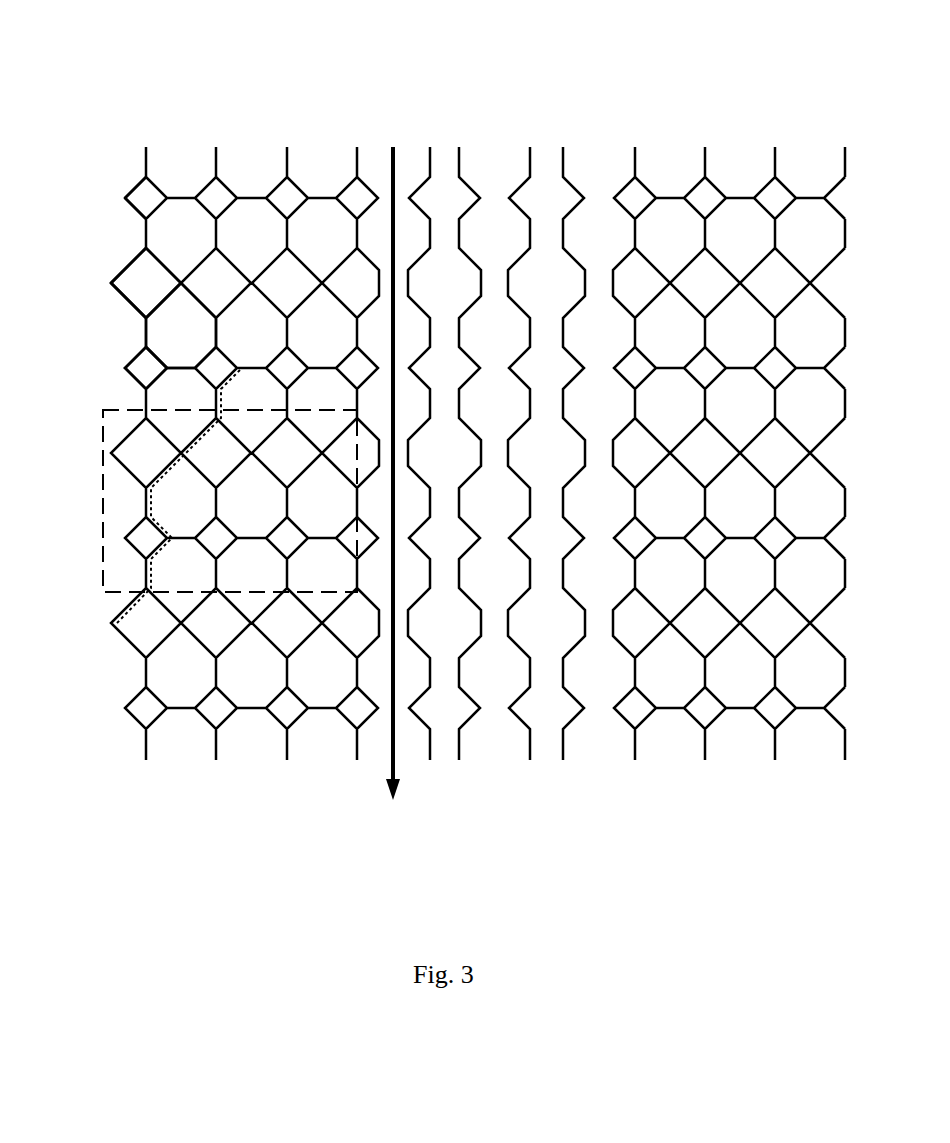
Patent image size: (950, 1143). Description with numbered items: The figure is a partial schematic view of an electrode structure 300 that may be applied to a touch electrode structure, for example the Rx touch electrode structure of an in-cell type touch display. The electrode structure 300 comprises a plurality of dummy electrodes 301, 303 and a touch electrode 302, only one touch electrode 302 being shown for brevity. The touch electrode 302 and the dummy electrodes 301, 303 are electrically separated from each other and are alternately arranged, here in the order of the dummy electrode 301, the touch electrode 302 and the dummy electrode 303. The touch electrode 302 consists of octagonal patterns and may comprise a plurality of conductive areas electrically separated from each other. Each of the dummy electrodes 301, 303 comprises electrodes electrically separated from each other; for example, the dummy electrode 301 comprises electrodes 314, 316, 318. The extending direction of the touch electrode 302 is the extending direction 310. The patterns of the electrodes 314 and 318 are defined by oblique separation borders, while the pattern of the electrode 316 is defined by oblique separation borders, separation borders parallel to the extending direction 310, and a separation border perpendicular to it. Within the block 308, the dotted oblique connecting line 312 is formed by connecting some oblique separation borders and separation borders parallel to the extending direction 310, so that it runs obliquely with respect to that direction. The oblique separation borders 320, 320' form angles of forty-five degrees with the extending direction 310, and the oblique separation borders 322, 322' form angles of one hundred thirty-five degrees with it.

The electrode structure 300 is at (203, 50).
The dummy electrode 301 is at (353, 113).
The touch electrode 302 is at (628, 112).
The dummy electrode 303 is at (860, 112).
The block 308 is at (118, 497).
The extending direction 310 is at (399, 495).
The oblique connecting line 312 is at (115, 613).
The electrode 314 is at (158, 287).
The electrode 316 is at (180, 323).
The electrode 318 is at (145, 365).
The oblique separation border 320 is at (104, 174).
The oblique separation border 322 is at (104, 202).
The oblique separation border 320' is at (94, 257).
The oblique separation border 322' is at (94, 293).